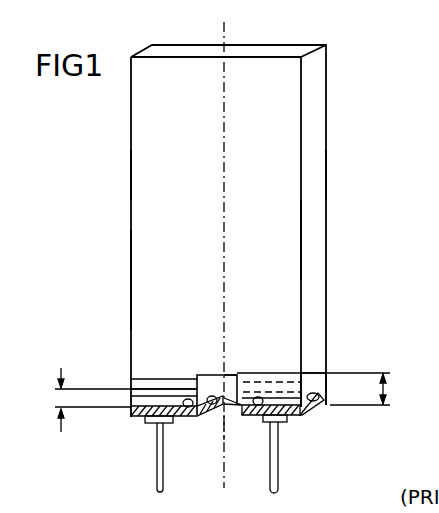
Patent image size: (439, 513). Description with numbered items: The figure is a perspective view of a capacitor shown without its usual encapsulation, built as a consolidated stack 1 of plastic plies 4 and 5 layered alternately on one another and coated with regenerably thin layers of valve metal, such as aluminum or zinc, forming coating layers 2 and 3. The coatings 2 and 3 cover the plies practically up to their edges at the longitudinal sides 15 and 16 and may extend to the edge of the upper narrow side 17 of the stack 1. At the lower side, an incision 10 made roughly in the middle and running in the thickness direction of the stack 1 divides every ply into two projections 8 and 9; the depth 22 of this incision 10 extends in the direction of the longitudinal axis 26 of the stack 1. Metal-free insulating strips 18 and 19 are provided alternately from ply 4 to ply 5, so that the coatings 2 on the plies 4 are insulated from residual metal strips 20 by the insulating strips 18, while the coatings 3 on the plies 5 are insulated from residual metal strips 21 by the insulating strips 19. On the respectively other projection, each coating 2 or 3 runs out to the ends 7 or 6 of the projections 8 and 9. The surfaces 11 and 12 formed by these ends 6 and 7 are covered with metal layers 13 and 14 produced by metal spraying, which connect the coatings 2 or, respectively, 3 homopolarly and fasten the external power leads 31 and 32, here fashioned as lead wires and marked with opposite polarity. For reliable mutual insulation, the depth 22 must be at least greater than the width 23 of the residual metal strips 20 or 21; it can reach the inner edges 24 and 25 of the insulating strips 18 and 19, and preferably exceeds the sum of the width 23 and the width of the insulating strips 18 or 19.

The consolidated stack 1 is at (282, 115).
The coating layer 2 is at (152, 292).
The coating layer 3 is at (301, 258).
The plastic ply 4 is at (131, 257).
The plastic ply 5 is at (301, 222).
The end of projection 6 is at (192, 408).
The end of projection 7 is at (258, 410).
The projection 8 is at (208, 382).
The projection 9 is at (312, 380).
The incision 10 is at (233, 425).
The surface 11 is at (208, 418).
The surface 12 is at (312, 398).
The metal layer 13 is at (141, 416).
The metal layer 14 is at (290, 415).
The longitudinal side 15 is at (131, 180).
The longitudinal side 16 is at (316, 180).
The upper narrow side 17 is at (267, 50).
The insulating strip 18 is at (141, 379).
The insulating strip 19 is at (282, 373).
The residual metal strip 20 is at (130, 406).
The residual metal strip 21 is at (312, 414).
The depth of the incision 22 is at (388, 395).
The width of the residual metal strips 23 is at (63, 401).
The inner edge of insulating strip 24 is at (170, 379).
The inner edge of insulating strip 25 is at (249, 375).
The longitudinal axis 26 is at (221, 30).
The external power lead 31 is at (155, 482).
The external power lead 32 is at (283, 493).